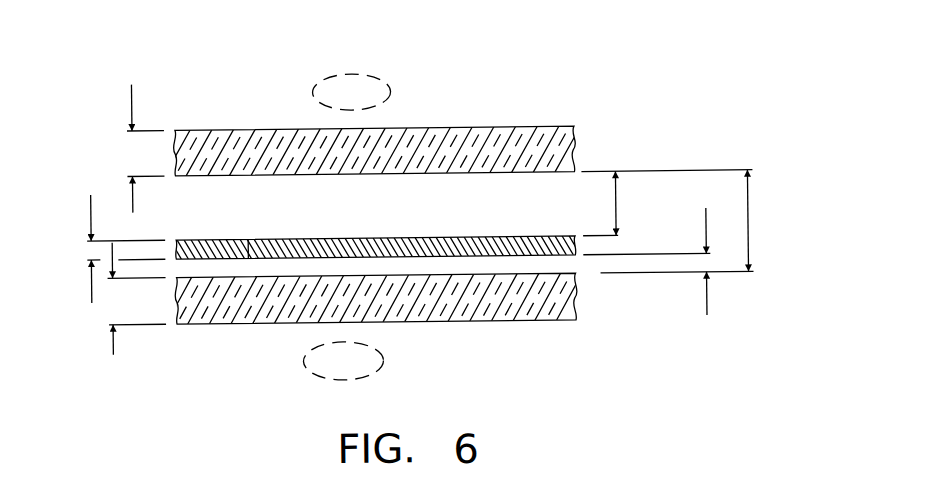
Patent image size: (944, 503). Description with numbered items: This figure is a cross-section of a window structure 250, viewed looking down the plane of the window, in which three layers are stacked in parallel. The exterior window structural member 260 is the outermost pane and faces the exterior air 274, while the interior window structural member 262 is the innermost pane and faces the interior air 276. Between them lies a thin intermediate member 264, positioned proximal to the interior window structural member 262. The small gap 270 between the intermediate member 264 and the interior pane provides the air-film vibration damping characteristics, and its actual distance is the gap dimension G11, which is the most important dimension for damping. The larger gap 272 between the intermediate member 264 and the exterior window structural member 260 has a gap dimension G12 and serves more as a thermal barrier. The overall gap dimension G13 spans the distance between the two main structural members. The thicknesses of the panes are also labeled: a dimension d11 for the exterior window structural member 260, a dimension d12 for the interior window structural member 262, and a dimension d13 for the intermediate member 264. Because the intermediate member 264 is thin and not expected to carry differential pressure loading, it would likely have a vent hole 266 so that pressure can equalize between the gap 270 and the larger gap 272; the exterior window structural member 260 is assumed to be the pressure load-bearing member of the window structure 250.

The window structure 250 is at (173, 63).
The exterior window structural member 260 is at (378, 164).
The interior window structural member 262 is at (371, 305).
The intermediate member 264 is at (412, 238).
The vent hole 266 is at (248, 238).
The gap 270 is at (560, 266).
The larger gap 272 is at (523, 199).
The exterior air 274 is at (351, 92).
The interior air 276 is at (343, 361).
The thickness of outer window structural member d11 is at (133, 94).
The thickness of interior window structural member d12 is at (112, 342).
The thickness of intermediate member d13 is at (91, 198).
The gap dimension G11 is at (708, 313).
The gap dimension G12 is at (618, 205).
The overall gap dimension G13 is at (750, 220).